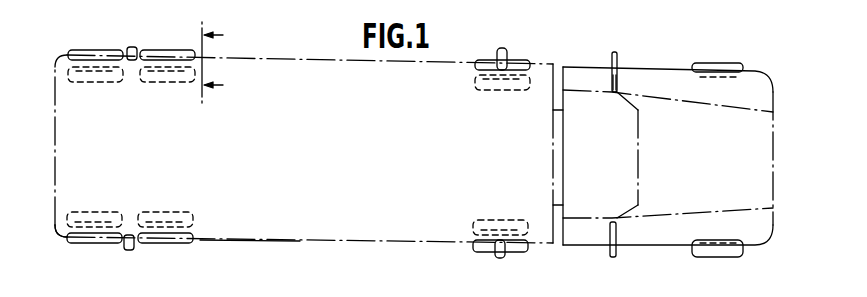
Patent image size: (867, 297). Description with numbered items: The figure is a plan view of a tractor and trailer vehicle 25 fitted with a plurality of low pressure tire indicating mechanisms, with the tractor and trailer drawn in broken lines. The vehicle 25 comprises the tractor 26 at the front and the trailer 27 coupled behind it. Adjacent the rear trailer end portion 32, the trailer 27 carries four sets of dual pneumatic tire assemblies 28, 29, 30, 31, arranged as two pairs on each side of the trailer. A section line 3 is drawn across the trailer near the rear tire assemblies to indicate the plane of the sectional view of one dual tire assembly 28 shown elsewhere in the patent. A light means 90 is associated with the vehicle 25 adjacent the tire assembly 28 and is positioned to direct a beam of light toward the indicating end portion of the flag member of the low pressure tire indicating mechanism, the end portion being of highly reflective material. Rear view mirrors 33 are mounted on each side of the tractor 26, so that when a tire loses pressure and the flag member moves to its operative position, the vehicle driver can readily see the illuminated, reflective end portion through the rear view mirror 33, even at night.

The section line 3- 3 is at (212, 61).
The vehicle 25 is at (310, 242).
The tractor 26 is at (628, 245).
The trailer 27 is at (263, 241).
The dual pneumatic tire assembly 28 is at (158, 50).
The dual pneumatic tire assembly 29 is at (85, 50).
The dual pneumatic tire assembly 30 is at (162, 244).
The dual pneumatic tire assembly 31 is at (90, 244).
The rear trailer end portion 32 is at (62, 236).
The rear view mirror 33 is at (617, 70).
The light means 90 is at (130, 47).